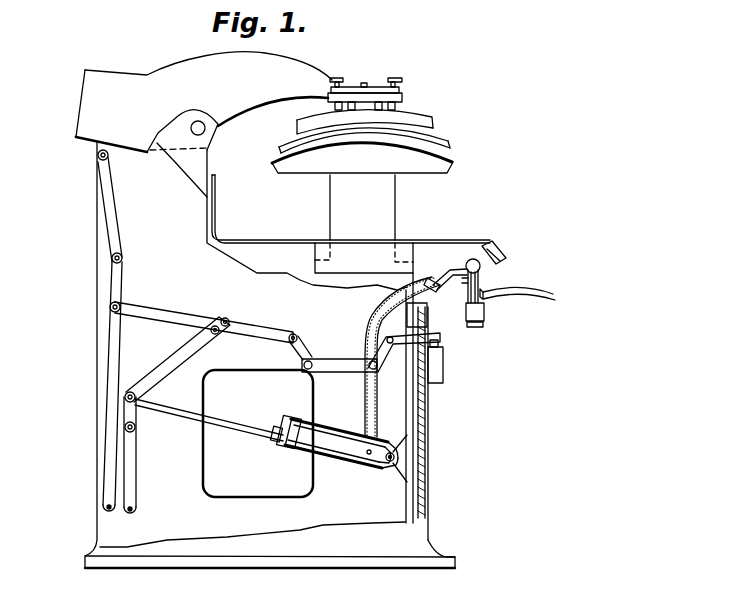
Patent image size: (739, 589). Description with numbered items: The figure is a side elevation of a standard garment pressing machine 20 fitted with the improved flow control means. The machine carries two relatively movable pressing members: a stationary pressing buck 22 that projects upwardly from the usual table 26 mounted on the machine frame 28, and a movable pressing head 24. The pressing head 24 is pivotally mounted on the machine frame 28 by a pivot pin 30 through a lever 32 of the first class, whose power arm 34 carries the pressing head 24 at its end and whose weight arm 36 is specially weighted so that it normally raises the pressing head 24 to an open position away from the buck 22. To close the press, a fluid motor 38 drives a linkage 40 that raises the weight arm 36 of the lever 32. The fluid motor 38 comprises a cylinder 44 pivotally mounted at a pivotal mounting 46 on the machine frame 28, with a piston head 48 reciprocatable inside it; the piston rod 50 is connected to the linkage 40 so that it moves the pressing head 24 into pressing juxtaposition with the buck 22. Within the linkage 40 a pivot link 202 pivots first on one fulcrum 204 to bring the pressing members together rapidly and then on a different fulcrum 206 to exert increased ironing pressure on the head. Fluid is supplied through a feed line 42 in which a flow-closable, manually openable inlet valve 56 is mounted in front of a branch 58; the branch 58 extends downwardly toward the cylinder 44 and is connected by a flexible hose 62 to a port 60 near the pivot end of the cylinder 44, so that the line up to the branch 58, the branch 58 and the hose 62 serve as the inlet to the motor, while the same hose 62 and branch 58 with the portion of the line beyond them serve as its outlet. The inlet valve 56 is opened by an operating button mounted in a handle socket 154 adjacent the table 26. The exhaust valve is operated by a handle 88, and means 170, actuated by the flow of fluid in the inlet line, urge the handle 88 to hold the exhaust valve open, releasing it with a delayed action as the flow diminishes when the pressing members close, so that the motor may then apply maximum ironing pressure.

The garment pressing machine 20 is at (98, 267).
The stationary pressing buck 22 is at (445, 164).
The pressing head 24 is at (450, 148).
The table 26 is at (272, 239).
The machine frame 28 is at (155, 272).
The pivot pin 30 is at (216, 132).
The lever 32 is at (204, 89).
The power arm 34 is at (310, 78).
The weight arm 36 is at (80, 135).
The fluid motor 38 is at (327, 431).
The linkage 40 is at (158, 370).
The feed line 42 is at (468, 302).
The cylinder 44 is at (337, 462).
The pivotal mounting 46 is at (395, 457).
The piston head 48 is at (302, 441).
The piston rod 50 is at (217, 421).
The inlet valve 56 is at (481, 269).
The branch 58 is at (452, 267).
The port 60 is at (368, 456).
The flexible hose 62 is at (375, 391).
The handle 88 is at (517, 286).
The handle socket 154 is at (504, 259).
The flow-actuated means 170 is at (485, 316).
The pivot link 202 is at (187, 354).
The fulcrum 204 is at (136, 428).
The fulcrum 206 is at (229, 321).